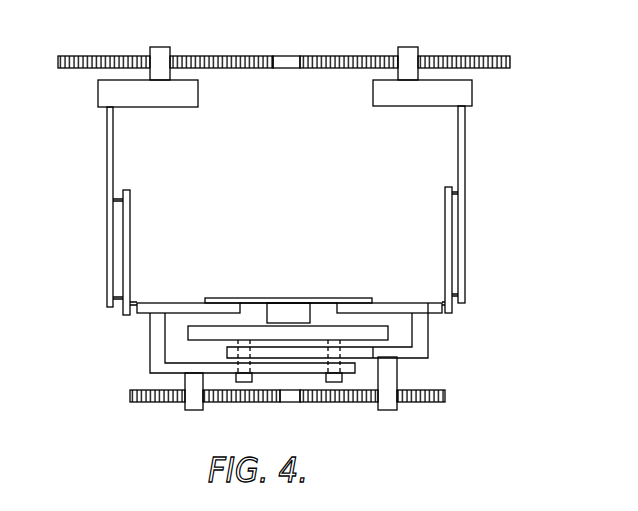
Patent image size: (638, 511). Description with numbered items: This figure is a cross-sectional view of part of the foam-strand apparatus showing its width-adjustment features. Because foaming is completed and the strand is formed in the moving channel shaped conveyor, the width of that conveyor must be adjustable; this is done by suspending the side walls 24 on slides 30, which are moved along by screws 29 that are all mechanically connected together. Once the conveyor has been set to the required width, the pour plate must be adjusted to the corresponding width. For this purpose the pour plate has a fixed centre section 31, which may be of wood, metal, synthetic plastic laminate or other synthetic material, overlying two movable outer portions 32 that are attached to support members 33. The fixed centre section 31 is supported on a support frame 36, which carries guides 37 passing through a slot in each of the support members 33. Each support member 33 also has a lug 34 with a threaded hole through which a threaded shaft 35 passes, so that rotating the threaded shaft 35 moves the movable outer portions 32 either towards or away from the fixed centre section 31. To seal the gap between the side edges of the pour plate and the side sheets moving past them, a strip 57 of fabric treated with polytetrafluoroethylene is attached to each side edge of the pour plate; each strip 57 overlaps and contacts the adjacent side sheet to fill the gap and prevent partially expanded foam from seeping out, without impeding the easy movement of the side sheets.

The screws 29 is at (291, 56).
The slides 30 is at (100, 96).
The side walls 24 is at (131, 218).
The strip 57 is at (136, 302).
The movable outer portions 32 is at (192, 302).
The fixed centre section 31 is at (293, 298).
The support members 33 is at (420, 328).
The support frame 36 is at (188, 329).
The guides 37 is at (243, 384).
The threaded shaft 35 is at (130, 397).
The lug 34 is at (190, 406).